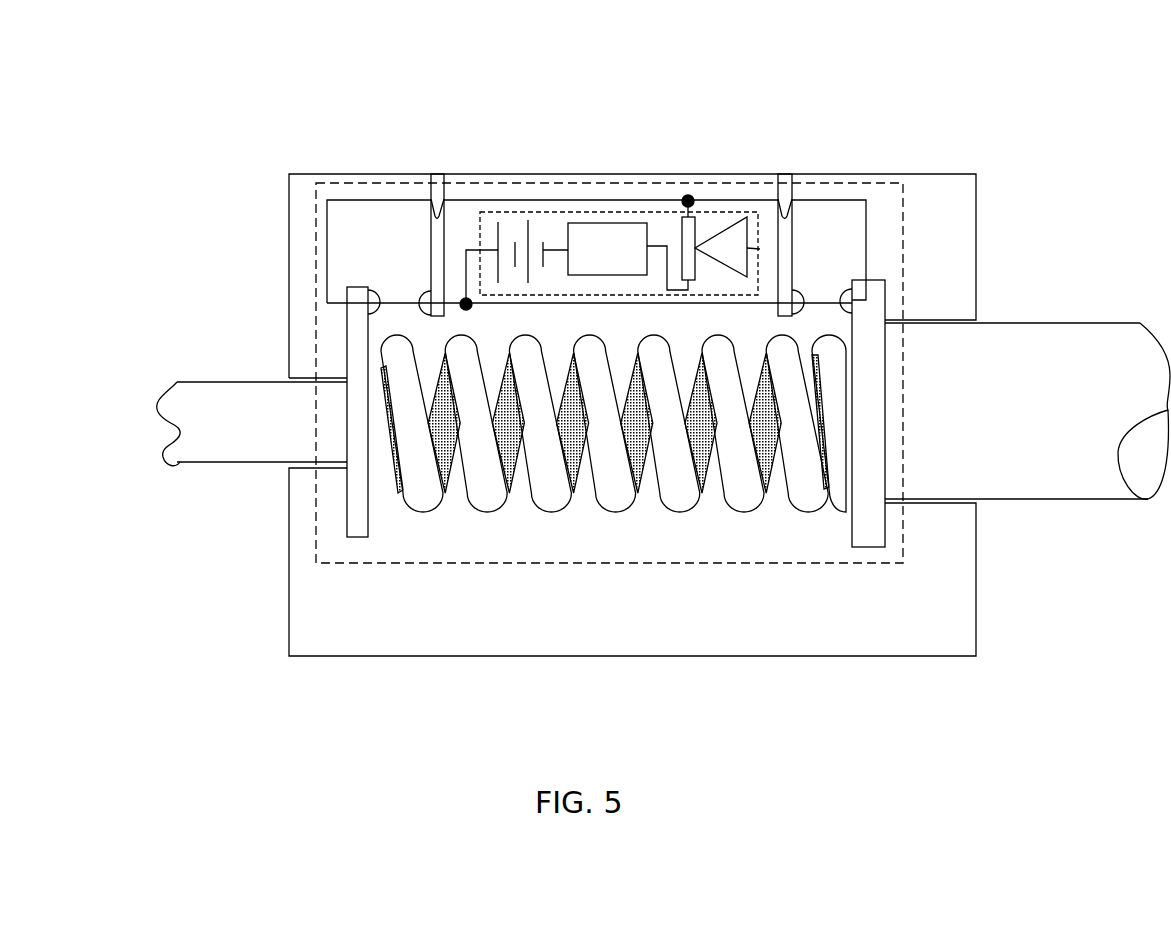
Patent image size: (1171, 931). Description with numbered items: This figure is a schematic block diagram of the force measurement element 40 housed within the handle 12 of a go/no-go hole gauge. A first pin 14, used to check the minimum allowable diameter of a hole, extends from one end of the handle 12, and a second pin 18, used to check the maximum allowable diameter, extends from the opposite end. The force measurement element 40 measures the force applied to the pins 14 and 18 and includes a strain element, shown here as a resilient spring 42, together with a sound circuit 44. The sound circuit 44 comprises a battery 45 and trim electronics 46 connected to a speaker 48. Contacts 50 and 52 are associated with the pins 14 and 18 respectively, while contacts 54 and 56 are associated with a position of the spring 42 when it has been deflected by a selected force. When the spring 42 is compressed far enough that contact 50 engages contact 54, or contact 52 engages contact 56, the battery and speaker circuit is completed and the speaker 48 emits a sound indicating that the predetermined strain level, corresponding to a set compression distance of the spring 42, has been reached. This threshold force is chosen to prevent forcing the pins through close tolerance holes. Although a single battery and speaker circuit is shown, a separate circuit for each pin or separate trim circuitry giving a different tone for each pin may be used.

The handle 12 is at (313, 656).
The first pin 14 is at (190, 382).
The second pin 18 is at (1012, 323).
The force measurement element 40 is at (618, 563).
The resilient spring 42 is at (753, 492).
The sound circuit 44 is at (760, 249).
The battery 45 is at (500, 222).
The trim electronics 46 is at (597, 240).
The speaker 48 is at (716, 240).
The contact 50 is at (380, 290).
The contact 52 is at (843, 290).
The contact 54 is at (408, 302).
The contact 56 is at (803, 303).